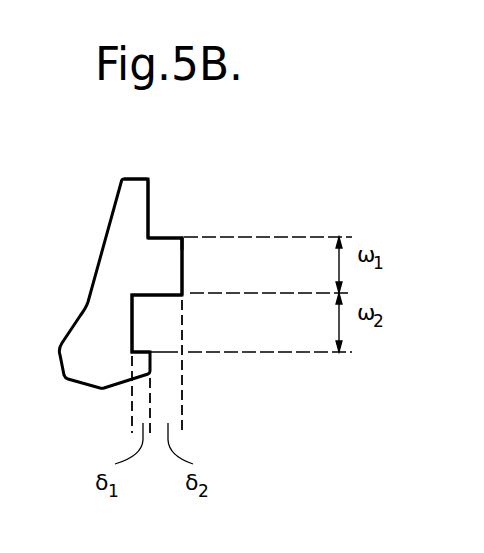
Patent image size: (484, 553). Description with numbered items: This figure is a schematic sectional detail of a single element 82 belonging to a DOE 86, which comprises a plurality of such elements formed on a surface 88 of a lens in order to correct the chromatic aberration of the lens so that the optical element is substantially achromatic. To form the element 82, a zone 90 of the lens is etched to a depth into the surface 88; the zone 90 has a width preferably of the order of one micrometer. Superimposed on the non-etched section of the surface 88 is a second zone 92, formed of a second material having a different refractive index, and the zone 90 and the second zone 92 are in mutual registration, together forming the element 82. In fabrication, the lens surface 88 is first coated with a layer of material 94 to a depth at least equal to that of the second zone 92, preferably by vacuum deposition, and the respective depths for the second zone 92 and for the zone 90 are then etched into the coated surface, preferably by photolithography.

The element 82 is at (85, 233).
The surface 88 is at (150, 188).
The layer of material 94 is at (173, 243).
The second zone 92 is at (185, 262).
The zone 90 is at (157, 337).
The DOE 86 is at (156, 443).